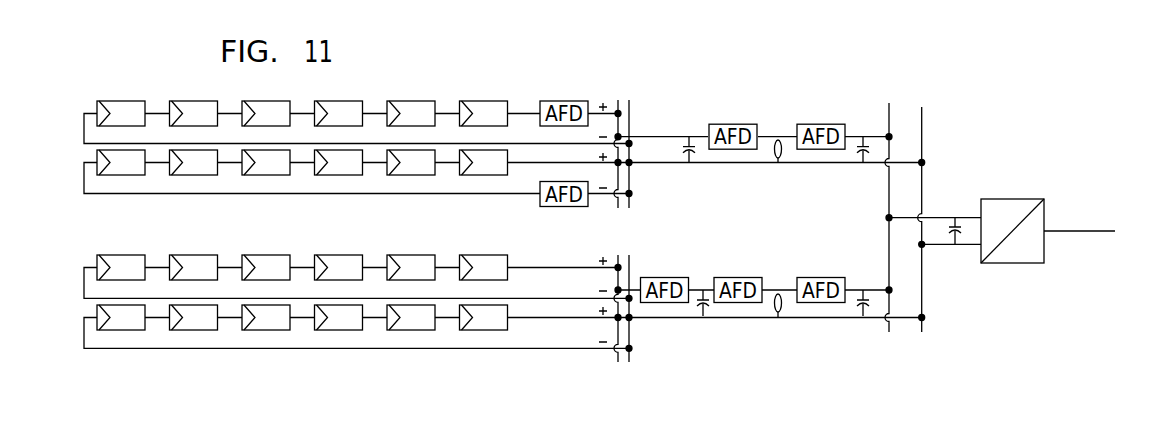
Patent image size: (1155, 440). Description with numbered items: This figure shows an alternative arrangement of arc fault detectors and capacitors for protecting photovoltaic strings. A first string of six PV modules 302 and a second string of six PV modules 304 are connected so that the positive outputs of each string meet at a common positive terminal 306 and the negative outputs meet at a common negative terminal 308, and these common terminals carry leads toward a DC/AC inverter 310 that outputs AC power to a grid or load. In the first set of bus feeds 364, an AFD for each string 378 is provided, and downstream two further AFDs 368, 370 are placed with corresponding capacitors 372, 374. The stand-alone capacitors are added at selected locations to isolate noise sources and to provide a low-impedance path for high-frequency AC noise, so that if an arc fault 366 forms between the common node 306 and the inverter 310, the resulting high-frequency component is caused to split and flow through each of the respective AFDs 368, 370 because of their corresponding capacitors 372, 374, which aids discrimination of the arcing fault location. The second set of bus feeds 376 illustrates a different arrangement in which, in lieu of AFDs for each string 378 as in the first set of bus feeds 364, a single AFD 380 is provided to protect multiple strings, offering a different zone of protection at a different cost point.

The first string of six PV modules 302 is at (526, 83).
The second string of six PV modules 304 is at (523, 189).
The AFD for each string 378 is at (580, 101).
The common positive terminal 306 is at (620, 136).
The common negative terminal 308 is at (629, 163).
The single AFD 380 is at (673, 277).
The AFD 368 is at (738, 124).
The AFD 370 is at (810, 124).
The capacitor 372 is at (700, 150).
The arc fault 366 is at (785, 158).
The capacitor 374 is at (870, 151).
The first set of bus feeds 364 is at (910, 127).
The second set of bus feeds 376 is at (944, 306).
The DC/AC inverter 310 is at (1036, 199).